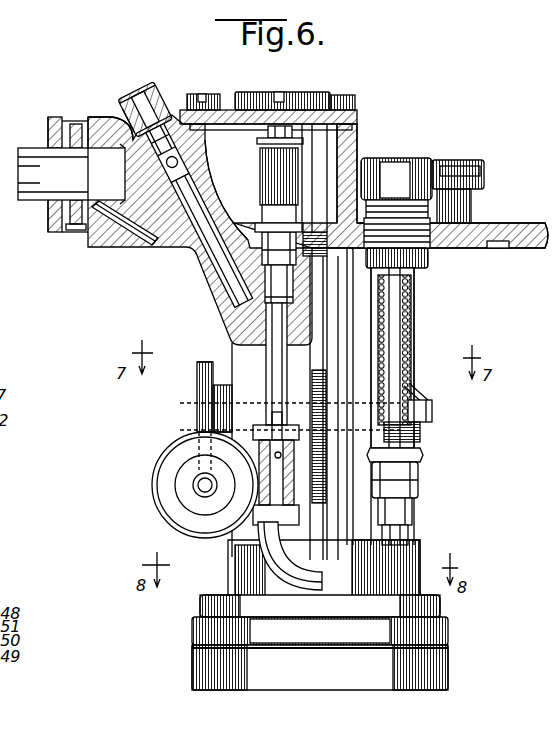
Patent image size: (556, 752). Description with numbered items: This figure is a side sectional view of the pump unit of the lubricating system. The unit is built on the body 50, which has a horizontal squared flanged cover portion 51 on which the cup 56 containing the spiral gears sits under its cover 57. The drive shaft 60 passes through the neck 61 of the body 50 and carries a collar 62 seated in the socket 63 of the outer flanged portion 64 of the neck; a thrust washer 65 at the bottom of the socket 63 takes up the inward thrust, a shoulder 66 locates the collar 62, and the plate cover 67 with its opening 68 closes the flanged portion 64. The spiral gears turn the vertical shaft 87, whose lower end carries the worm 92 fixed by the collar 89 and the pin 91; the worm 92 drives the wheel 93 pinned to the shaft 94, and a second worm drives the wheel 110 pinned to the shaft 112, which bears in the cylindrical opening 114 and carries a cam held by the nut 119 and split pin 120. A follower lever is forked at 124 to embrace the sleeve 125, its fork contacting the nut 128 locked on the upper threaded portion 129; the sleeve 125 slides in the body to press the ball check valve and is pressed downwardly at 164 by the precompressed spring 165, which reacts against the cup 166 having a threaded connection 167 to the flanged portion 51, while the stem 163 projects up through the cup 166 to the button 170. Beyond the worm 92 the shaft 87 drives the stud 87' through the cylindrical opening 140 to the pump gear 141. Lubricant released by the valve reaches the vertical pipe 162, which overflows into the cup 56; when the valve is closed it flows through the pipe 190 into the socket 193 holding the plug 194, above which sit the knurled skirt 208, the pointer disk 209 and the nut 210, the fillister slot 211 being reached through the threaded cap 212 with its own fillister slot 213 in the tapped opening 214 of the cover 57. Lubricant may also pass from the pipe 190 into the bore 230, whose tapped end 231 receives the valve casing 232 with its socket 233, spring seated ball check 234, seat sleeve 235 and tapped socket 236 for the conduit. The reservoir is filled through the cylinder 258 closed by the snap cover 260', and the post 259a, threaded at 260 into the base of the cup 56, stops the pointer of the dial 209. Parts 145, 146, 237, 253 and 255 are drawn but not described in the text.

The body 50 is at (237, 346).
The flanged cover portion 51 is at (543, 243).
The cup 56 is at (346, 159).
The cover 57 is at (353, 120).
The shaft 60 is at (32, 150).
The neck 61 is at (112, 232).
The collar 62 is at (78, 228).
The socket 63 is at (92, 125).
The outer flanged portion 64 is at (70, 122).
The thrust washer 65 is at (93, 238).
The shoulder 66 is at (80, 229).
The plate cover 67 is at (63, 230).
The opening 68 is at (48, 145).
The vertical shaft 87 is at (219, 475).
The stud 87' is at (306, 568).
The collar 89 is at (278, 453).
The pin 91 is at (262, 464).
The worm 92 is at (296, 477).
The wheel 93 is at (152, 492).
The shaft 94 is at (200, 488).
The wheel 110 is at (197, 370).
The shaft 112 is at (433, 423).
The cylindrical opening 114 is at (238, 406).
The nut 119 is at (418, 400).
The split pin 120 is at (426, 408).
The fork 124 is at (413, 500).
The sleeve 125 is at (396, 519).
The nut 128 is at (415, 481).
The upper threaded portion 129 is at (404, 446).
The cylindrical opening 140 is at (232, 582).
The gear 141 is at (303, 652).
The base ring 145 is at (436, 663).
The ring 146 is at (447, 636).
The vertical pipe 162 is at (313, 380).
The stem 163 is at (395, 330).
The spring bearing portion of sleeve 164 is at (412, 439).
The precompressed spring 165 is at (412, 306).
The cup 166 is at (424, 268).
The threaded connection 167 is at (429, 237).
The button 170 is at (403, 172).
The pipe 190 is at (278, 571).
The socket 193 is at (260, 312).
The plug 194 is at (232, 284).
The skirt 208 is at (262, 218).
The pointer disk 209 is at (264, 197).
The nut 210 is at (344, 111).
The fillister slot 211 is at (321, 94).
The threaded cap 212 is at (291, 90).
The fillister slot 213 is at (278, 91).
The tapped opening 214 is at (225, 100).
The bore 230 is at (224, 259).
The enlarged tapped end 231 is at (203, 148).
The valve casing 232 is at (165, 92).
The socket 233 is at (179, 161).
The spring seated ball check 234 is at (184, 169).
The sleeve 235 is at (157, 240).
The tapped socket 236 is at (150, 84).
The knob side 237 is at (126, 85).
The bearing 253 is at (48, 245).
The housing 255 is at (48, 222).
The cylinder 258 is at (473, 198).
The post 259a is at (318, 143).
The threaded connection 260 is at (335, 206).
The snap cover 260' is at (488, 165).